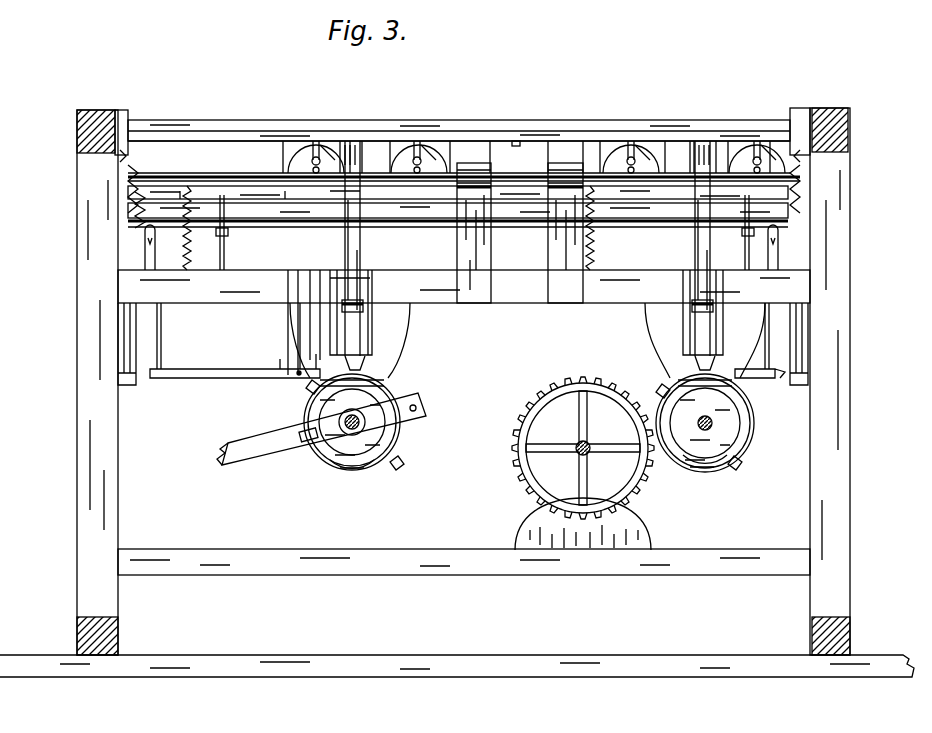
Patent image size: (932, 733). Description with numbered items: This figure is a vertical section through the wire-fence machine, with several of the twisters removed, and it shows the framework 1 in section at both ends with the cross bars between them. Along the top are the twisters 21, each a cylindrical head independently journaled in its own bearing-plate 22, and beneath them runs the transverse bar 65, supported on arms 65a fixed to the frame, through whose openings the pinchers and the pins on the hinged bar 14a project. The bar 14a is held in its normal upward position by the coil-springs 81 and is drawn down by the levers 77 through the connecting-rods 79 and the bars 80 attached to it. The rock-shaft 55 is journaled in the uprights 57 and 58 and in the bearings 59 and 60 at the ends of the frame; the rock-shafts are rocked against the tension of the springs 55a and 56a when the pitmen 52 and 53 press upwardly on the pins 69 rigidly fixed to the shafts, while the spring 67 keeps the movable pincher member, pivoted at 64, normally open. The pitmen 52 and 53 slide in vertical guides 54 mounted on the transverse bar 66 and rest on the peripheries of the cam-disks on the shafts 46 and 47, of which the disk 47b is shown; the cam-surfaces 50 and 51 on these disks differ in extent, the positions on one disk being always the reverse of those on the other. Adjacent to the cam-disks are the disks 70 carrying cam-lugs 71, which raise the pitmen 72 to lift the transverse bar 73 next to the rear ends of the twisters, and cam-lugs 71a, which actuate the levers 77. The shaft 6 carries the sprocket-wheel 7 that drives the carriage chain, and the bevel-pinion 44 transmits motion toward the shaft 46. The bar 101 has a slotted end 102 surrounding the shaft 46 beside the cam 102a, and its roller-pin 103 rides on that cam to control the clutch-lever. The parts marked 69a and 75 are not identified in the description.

The framework 1 is at (457, 392).
The shaft 6 is at (586, 444).
The sprocket-wheel 7 is at (583, 448).
The transverse bar 14a is at (464, 268).
The twister 21 is at (292, 158).
The bearing-plate 22 is at (436, 145).
The bevel-pinion 44 is at (355, 429).
The shaft 46 is at (344, 466).
The shaft 47 is at (705, 423).
The disk 47b is at (738, 432).
The cam-surface 50 is at (380, 385).
The cam-surface 51 is at (392, 448).
The pitman 52 is at (362, 243).
The pitman 53 is at (696, 256).
The vertical guide 54 is at (370, 290).
The rock-shaft 55 is at (216, 173).
The spring 55a is at (190, 255).
The spring 56a is at (594, 252).
The upright 57 is at (474, 233).
The upright 58 is at (565, 233).
The bearing 59 is at (128, 190).
The bearing 60 is at (806, 179).
The pivot 64 is at (162, 177).
The transverse bar 65 is at (304, 226).
The arm 65a is at (128, 334).
The transverse bar 66 is at (458, 300).
The spring 67 is at (218, 246).
The pin 69 is at (363, 157).
The bar 69a is at (680, 163).
The disk 70 is at (400, 433).
The cam-lug 71 is at (308, 389).
The cam-lug 71a is at (382, 472).
The pitman 72 is at (348, 141).
The transverse bar 73 is at (534, 144).
The guide 75 is at (349, 324).
The lever 77 is at (467, 340).
The connecting-rod 79 is at (162, 342).
The bar 80 is at (464, 247).
The coil-spring 81 is at (481, 155).
The bar 101 is at (321, 429).
The slot 102 is at (312, 452).
The cam 102a is at (316, 420).
The roller-pin 103 is at (408, 409).